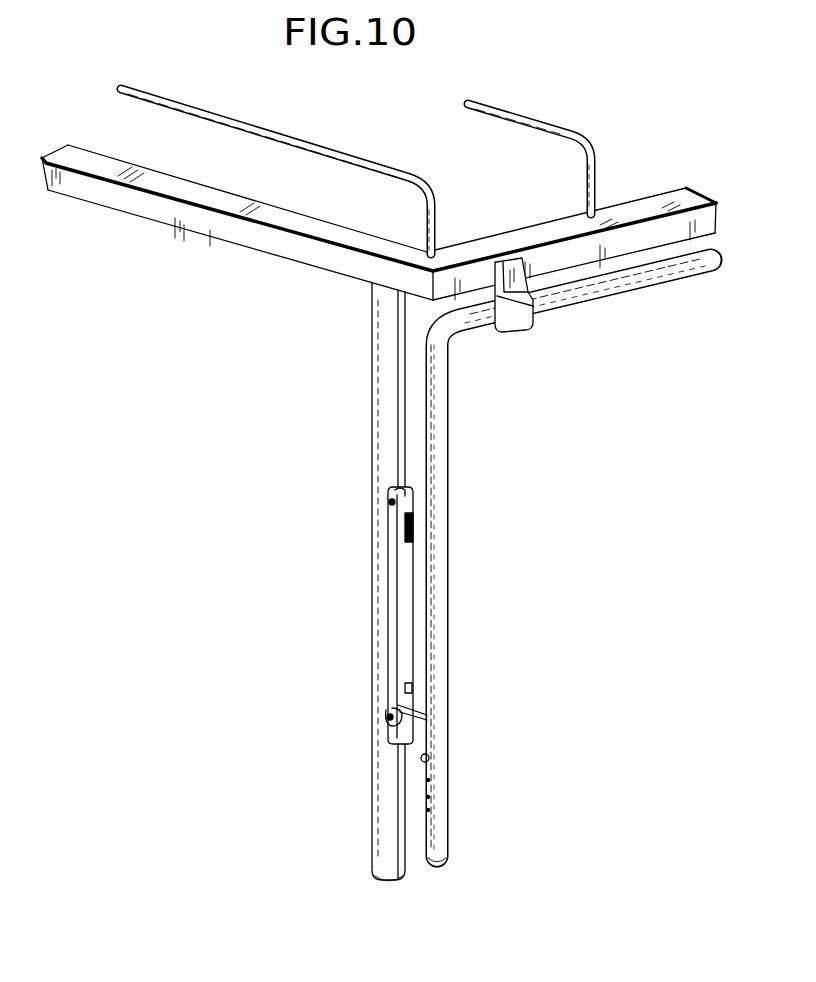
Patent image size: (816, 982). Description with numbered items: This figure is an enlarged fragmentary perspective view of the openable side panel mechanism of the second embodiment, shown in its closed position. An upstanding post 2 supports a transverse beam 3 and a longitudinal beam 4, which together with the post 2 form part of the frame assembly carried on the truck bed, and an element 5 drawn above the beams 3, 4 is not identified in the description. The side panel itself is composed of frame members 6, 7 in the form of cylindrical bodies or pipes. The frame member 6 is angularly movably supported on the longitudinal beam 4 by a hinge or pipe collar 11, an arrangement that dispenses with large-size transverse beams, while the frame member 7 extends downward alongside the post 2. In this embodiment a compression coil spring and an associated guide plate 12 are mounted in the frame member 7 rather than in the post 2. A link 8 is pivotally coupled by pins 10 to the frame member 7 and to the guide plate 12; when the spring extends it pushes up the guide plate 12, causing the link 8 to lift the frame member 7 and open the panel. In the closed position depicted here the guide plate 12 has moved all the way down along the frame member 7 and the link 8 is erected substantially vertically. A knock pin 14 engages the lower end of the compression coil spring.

The upstanding post 2 is at (373, 403).
The transverse beam 3 is at (253, 247).
The longitudinal beam 4 is at (637, 207).
The guard rail hoop 5 is at (297, 138).
The frame member 6 is at (640, 288).
The frame member 7 is at (450, 487).
The link 8 is at (388, 633).
The pin 10 is at (335, 737).
The pipe collar 11 is at (520, 328).
The guide plate 12 is at (415, 733).
The knock pin 14 is at (430, 758).